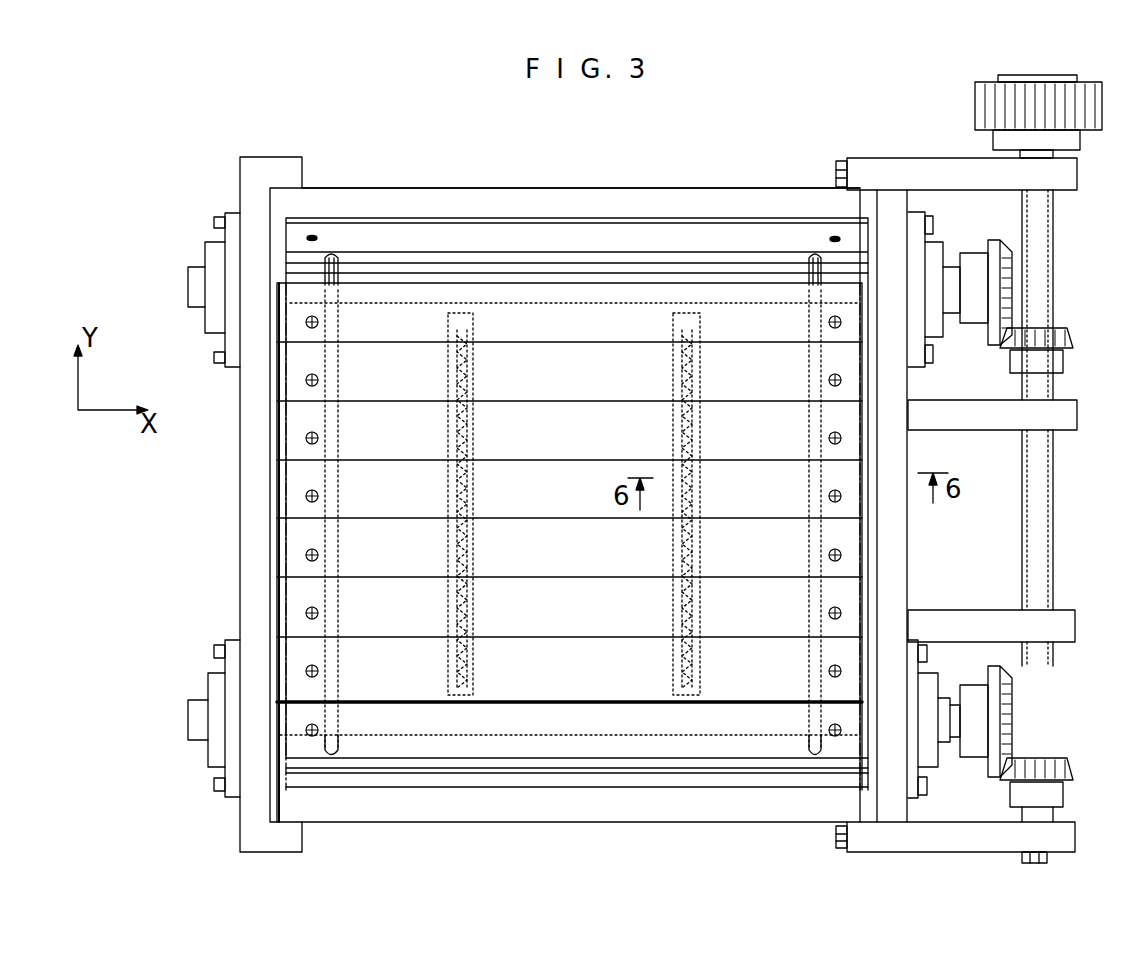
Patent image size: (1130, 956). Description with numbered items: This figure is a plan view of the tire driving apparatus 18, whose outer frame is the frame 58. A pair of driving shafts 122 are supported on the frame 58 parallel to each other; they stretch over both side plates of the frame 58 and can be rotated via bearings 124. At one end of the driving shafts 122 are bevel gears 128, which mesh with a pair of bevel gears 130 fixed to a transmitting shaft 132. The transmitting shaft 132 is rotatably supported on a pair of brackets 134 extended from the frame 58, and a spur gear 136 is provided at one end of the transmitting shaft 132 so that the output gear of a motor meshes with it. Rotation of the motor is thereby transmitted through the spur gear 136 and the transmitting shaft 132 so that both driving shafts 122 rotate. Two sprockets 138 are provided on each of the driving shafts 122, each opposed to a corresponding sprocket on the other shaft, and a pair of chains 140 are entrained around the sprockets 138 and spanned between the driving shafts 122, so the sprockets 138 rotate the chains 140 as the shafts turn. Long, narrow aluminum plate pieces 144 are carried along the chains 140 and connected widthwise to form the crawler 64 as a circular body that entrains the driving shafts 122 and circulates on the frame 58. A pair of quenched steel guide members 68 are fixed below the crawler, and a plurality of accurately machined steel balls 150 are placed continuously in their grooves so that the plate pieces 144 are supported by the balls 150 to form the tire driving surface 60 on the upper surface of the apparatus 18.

The tire driving apparatus 18 is at (750, 146).
The frame 58 is at (240, 822).
The tire driving surface 60 is at (536, 368).
The crawler 64 is at (278, 547).
The guide members 68 is at (447, 537).
The driving shafts 122 is at (630, 273).
The bearings 124 is at (212, 330).
The bevel gears 128 is at (972, 325).
The bevel gears 130 is at (1060, 352).
The transmitting shaft 132 is at (1053, 510).
The brackets 134 is at (1067, 180).
The spur gear 136 is at (975, 103).
The sprockets 138 is at (340, 265).
The chains 140 is at (325, 475).
The plate pieces 144 is at (506, 237).
The balls 150 is at (448, 615).